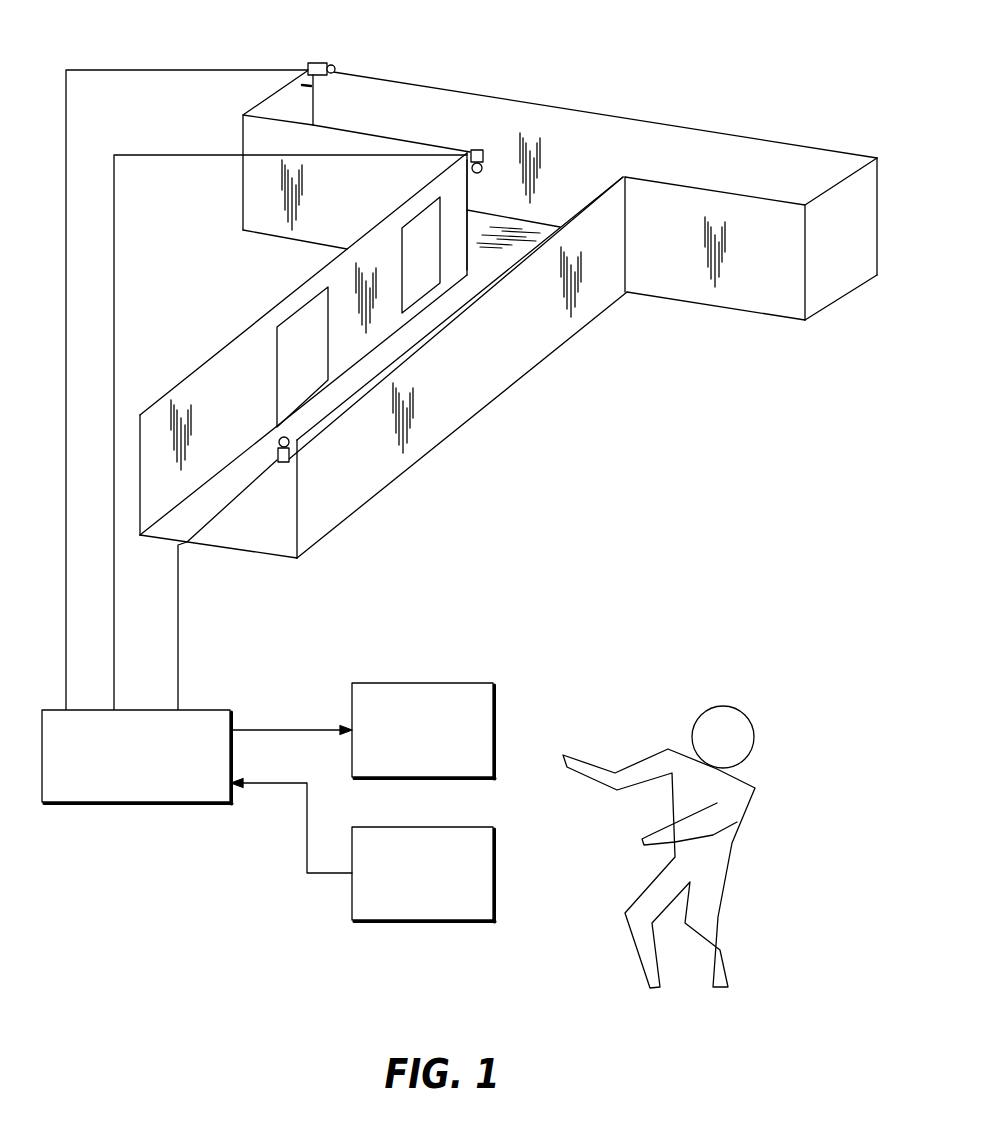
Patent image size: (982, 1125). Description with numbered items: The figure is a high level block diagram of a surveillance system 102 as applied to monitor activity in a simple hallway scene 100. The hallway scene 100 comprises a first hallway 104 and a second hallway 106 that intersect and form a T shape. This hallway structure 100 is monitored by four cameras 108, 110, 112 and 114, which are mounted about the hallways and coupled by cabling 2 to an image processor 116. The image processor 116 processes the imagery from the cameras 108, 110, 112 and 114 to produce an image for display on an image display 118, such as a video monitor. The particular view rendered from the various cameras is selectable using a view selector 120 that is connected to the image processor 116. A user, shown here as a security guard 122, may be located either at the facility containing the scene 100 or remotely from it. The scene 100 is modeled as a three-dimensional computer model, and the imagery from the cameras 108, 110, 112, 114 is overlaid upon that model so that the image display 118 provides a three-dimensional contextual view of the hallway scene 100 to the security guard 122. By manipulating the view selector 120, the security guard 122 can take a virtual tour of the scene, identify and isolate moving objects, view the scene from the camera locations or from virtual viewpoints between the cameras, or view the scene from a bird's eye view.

The cable 2 is at (160, 163).
The hallway scene 100 is at (508, 316).
The surveillance system 102 is at (294, 799).
The first hallway 104 is at (488, 380).
The second hallway 106 is at (483, 107).
The camera 108 is at (330, 56).
The camera 110 is at (485, 150).
The camera 112 is at (467, 156).
The camera 114 is at (284, 462).
The image processor 116 is at (145, 803).
The image display 118 is at (400, 683).
The view selector 120 is at (455, 922).
The security guard 122 is at (740, 830).